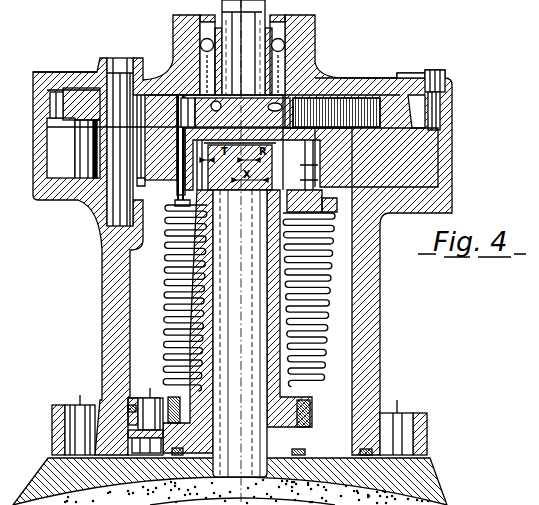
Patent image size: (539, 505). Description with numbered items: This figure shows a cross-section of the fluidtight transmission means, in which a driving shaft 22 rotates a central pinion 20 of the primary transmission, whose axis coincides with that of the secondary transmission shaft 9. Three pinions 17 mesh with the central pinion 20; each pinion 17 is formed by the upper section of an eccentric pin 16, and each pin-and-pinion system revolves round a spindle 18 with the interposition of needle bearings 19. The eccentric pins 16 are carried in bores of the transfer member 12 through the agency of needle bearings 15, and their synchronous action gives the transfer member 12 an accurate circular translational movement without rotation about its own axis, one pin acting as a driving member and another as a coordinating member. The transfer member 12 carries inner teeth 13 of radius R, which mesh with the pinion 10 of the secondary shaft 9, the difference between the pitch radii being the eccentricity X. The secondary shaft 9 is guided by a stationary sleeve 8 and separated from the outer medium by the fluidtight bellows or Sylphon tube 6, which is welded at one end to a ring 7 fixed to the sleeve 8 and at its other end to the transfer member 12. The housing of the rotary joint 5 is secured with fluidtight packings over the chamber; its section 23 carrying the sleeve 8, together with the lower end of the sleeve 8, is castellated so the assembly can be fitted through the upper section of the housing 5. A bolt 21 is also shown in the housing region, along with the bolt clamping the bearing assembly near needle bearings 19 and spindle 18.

The housing of the rotary joint 5 is at (367, 363).
The fluidtight bellows or Sylphon tube 6 is at (325, 347).
The ring 7 is at (310, 427).
The stationary sleeve 8 is at (202, 405).
The secondary transmission shaft 9 is at (236, 248).
The pinion of the secondary transmission shaft 10 is at (282, 176).
The transfer member 12 is at (425, 162).
The inner teeth 13 is at (313, 174).
The needle bearings 15 is at (70, 172).
The eccentric pin 16 is at (155, 143).
The pinion 17 is at (68, 100).
The spindle 18 is at (113, 72).
The needle bearings 19 is at (165, 85).
The central pinion 20 is at (292, 105).
The clamping bolt 21 is at (405, 92).
The driving shaft 22 is at (248, 48).
The section of the housing 23 is at (135, 408).